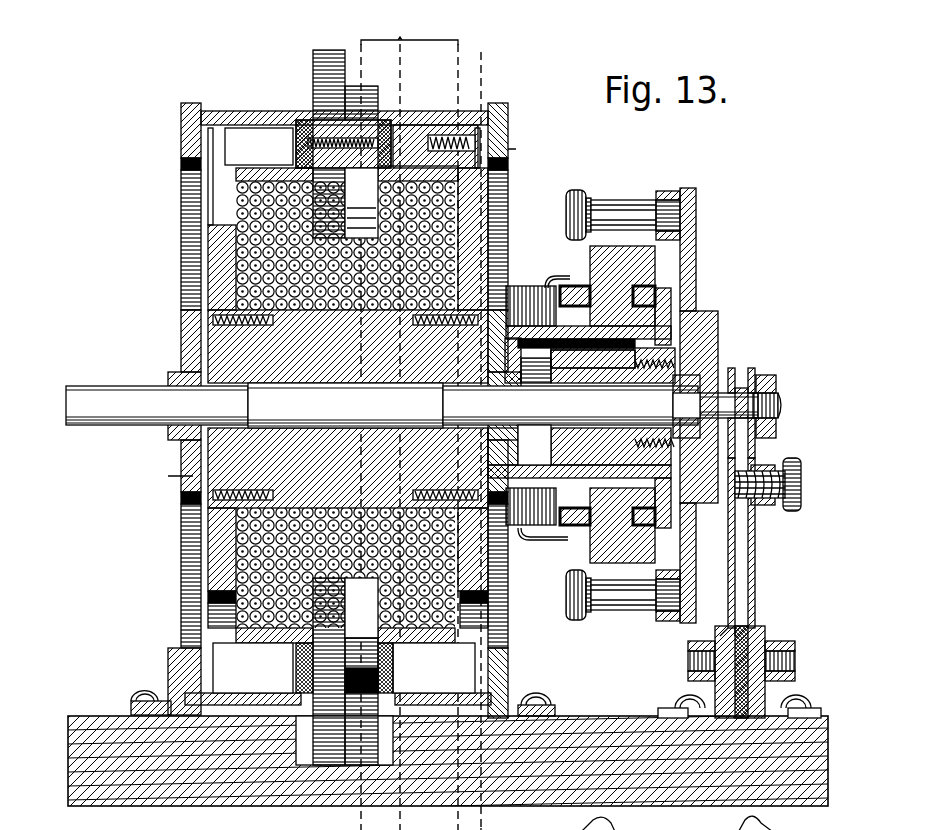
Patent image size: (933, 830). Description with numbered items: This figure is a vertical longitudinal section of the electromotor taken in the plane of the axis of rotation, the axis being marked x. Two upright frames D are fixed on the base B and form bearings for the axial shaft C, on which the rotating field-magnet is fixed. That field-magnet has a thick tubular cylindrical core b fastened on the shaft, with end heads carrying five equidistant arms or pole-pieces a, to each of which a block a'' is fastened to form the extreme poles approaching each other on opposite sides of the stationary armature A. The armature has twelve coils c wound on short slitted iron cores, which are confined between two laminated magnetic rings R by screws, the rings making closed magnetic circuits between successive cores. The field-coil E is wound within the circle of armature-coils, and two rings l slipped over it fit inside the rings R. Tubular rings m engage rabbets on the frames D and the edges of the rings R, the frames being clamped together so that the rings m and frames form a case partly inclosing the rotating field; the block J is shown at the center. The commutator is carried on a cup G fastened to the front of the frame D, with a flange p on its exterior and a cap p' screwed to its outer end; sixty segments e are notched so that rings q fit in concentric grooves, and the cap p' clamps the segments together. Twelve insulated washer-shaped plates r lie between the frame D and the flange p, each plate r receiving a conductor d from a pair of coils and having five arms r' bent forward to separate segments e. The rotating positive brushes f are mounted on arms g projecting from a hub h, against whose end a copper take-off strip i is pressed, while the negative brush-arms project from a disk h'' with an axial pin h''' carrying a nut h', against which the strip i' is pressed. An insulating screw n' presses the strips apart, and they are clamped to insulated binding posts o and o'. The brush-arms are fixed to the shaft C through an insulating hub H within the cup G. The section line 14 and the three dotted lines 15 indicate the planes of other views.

The armature A is at (343, 390).
The base B is at (448, 771).
The axial shaft C is at (412, 405).
The upright frame D is at (341, 313).
The field-coil E is at (348, 422).
The cup G is at (581, 402).
The hub H is at (544, 432).
The clamp block J is at (361, 671).
The magnetic ring R is at (378, 112).
The pole-piece a is at (348, 398).
The pole block a'' is at (346, 409).
The tubular cylindrical core b is at (348, 346).
The armature coil c is at (343, 397).
The conductor d is at (528, 823).
The commutator-segment e is at (622, 405).
The positive commutator-brush f is at (604, 208).
The brush-arm g is at (688, 266).
The hub h is at (728, 403).
The nut h' is at (765, 403).
The disk h'' is at (697, 406).
The pin h''' is at (780, 406).
The take-off brush i is at (724, 547).
The take-off brush i' is at (759, 543).
The ring l is at (222, 168).
The tubular ring m is at (236, 106).
The insulating screw n' is at (778, 484).
The binding post o is at (686, 679).
The binding post o' is at (793, 679).
The flange p is at (533, 385).
The flange or cap p' is at (667, 393).
The ring q is at (582, 508).
The plate r is at (543, 401).
The arm r' is at (550, 404).
The section axis x is at (58, 398).
The section line 14 14 is at (490, 62).
The section lines 15 15 is at (410, 24).